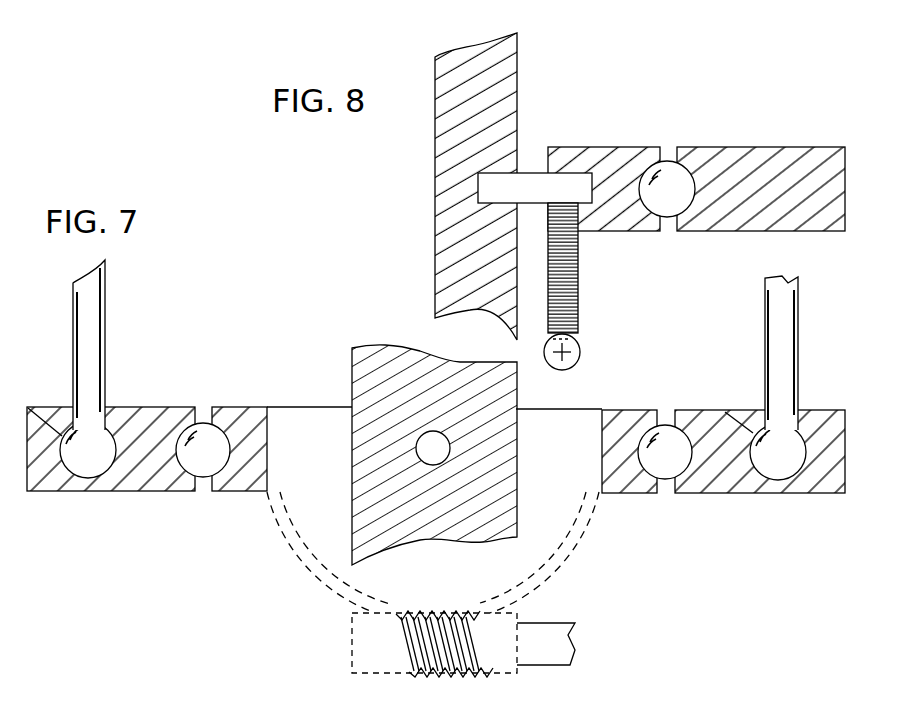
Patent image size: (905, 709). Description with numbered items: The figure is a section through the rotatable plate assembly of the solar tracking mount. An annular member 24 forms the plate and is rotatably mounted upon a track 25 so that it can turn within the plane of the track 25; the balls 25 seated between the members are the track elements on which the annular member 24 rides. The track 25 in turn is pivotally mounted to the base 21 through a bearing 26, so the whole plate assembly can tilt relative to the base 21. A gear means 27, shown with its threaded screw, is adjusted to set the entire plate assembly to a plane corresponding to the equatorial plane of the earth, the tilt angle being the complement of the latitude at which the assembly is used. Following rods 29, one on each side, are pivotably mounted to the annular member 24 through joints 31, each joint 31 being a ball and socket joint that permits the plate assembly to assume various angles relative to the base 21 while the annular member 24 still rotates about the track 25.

In FIG. 7, the base 21 is at (492, 468).
In FIG. 8, the base 21 is at (455, 172).
In FIG. 7, the annular member 24 is at (832, 473).
In FIG. 8, the annular member 24 is at (722, 150).
In FIG. 7, the track 25 is at (237, 492).
In FIG. 8, the track 25 is at (618, 160).
In FIG. 7, the bearing 26 is at (425, 452).
In FIG. 8, the bearing 26 is at (540, 192).
In FIG. 7, the gear means 27 is at (343, 627).
In FIG. 8, the gear means 27 is at (585, 333).
In FIG. 7, the following rod 29 is at (90, 372).
In FIG. 7, the joint 31 is at (93, 460).